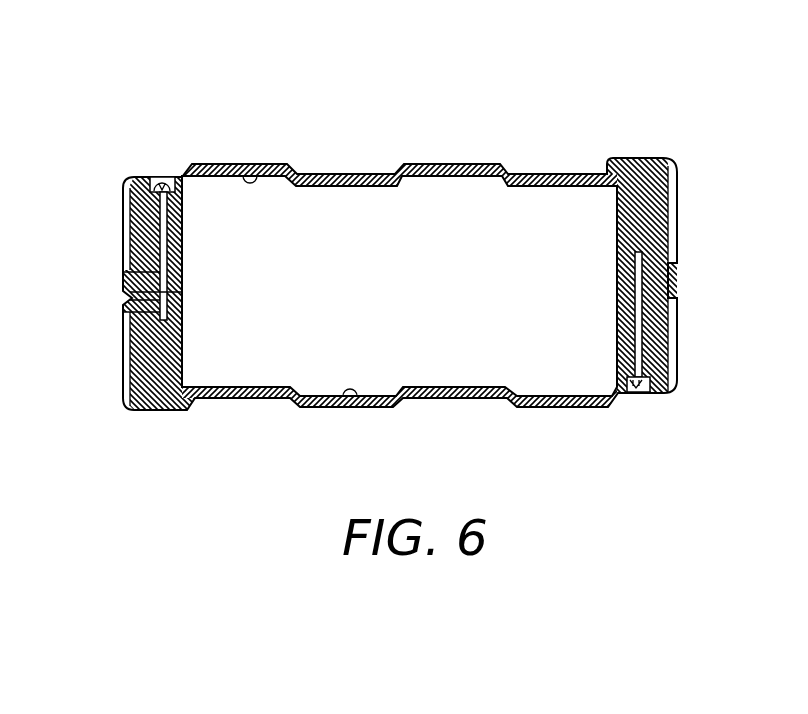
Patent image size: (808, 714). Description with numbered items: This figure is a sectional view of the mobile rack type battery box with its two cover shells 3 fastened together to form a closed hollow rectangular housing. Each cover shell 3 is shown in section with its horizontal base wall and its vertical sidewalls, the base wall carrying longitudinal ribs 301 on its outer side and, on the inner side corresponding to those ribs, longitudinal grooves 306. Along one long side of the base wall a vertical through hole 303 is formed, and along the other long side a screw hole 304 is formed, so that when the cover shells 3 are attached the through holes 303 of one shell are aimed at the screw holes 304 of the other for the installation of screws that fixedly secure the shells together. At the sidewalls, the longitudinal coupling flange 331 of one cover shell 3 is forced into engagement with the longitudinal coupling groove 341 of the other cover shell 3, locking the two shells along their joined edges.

The cover shell 3 is at (678, 224).
The longitudinal rib 301 is at (218, 166).
The vertical through hole 303 is at (146, 176).
The screw hole 304 is at (183, 293).
The longitudinal groove 306 is at (267, 166).
The longitudinal coupling flange 331 is at (238, 322).
The longitudinal coupling groove 341 is at (183, 312).